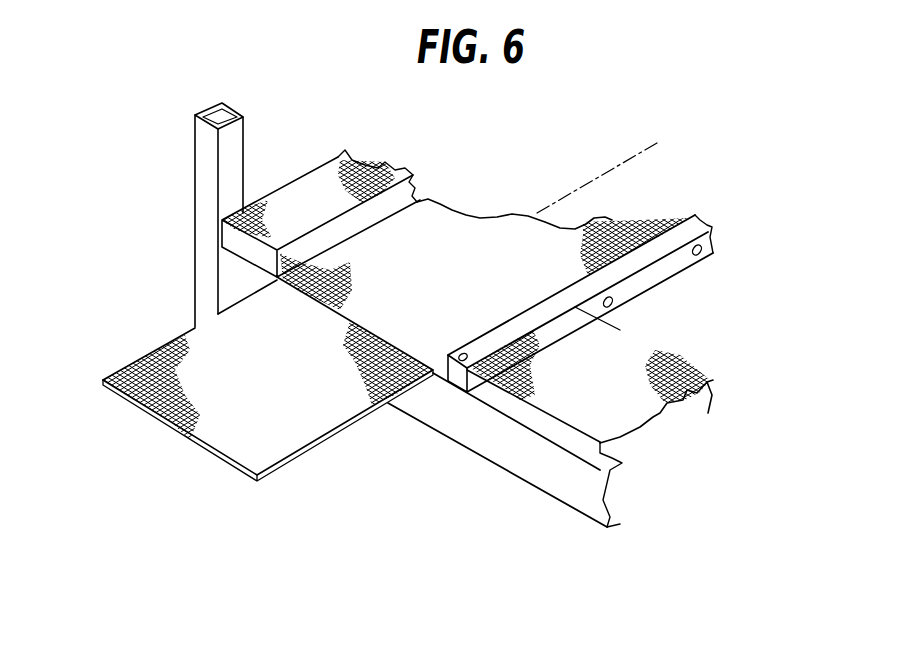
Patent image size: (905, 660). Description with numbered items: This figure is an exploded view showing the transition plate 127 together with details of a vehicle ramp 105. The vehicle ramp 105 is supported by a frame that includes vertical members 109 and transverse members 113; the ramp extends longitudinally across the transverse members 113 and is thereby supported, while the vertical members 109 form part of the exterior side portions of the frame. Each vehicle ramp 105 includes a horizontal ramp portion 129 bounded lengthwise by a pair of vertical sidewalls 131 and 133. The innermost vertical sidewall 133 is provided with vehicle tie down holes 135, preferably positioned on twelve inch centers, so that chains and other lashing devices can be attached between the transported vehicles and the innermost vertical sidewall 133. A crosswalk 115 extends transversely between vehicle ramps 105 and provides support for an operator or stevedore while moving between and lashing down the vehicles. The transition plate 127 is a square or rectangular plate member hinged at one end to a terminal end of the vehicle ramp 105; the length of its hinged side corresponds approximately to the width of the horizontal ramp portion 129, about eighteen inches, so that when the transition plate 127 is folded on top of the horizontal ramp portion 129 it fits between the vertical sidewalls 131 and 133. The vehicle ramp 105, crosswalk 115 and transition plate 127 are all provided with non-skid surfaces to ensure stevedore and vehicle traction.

The vehicle ramp 105 is at (497, 210).
The vertical member 109 is at (207, 162).
The transverse member 113 is at (533, 462).
The crosswalk 115 is at (615, 363).
The transition plate 127 is at (252, 355).
The horizontal ramp portion 129 is at (452, 287).
The vertical sidewall 131 is at (303, 198).
The innermost vertical sidewall 133 is at (650, 278).
The vehicle tie down hole 135 is at (701, 256).